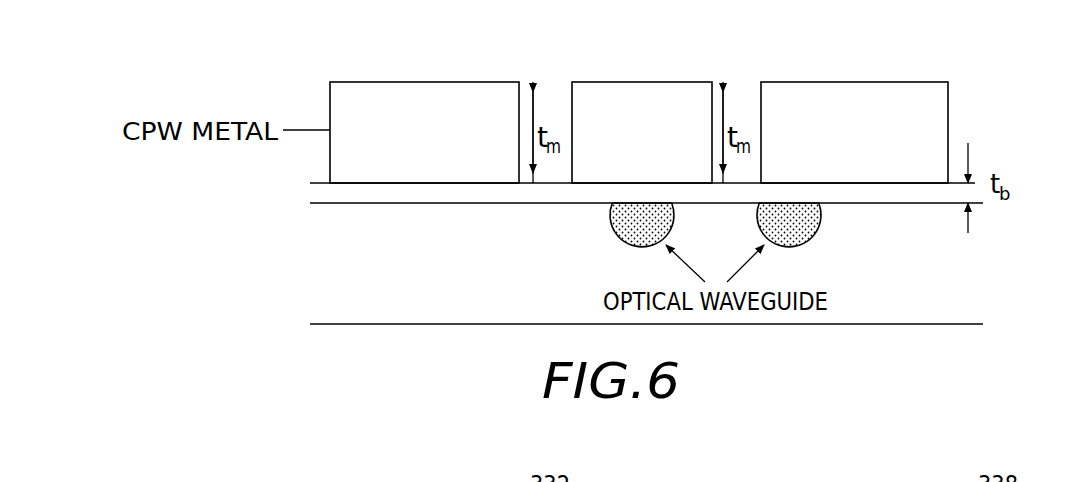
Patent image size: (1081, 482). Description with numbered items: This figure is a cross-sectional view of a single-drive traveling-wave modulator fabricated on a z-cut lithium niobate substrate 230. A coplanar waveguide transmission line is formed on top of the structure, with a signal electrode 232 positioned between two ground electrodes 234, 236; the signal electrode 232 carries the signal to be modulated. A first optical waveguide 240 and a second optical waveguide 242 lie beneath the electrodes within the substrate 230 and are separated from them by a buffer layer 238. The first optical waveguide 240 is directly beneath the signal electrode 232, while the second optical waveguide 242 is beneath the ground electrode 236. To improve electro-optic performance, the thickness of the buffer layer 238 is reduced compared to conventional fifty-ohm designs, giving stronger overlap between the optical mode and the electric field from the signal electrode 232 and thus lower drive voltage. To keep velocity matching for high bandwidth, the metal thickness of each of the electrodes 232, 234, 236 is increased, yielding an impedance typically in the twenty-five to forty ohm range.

The z-cut LiNbO3 substrate 230 is at (985, 203).
The signal electrode 232 is at (583, 82).
The ground electrode 234 is at (338, 82).
The ground electrode 236 is at (923, 82).
The buffer layer 238 is at (328, 194).
The first optical waveguide 240 is at (627, 236).
The second optical waveguide 242 is at (797, 223).